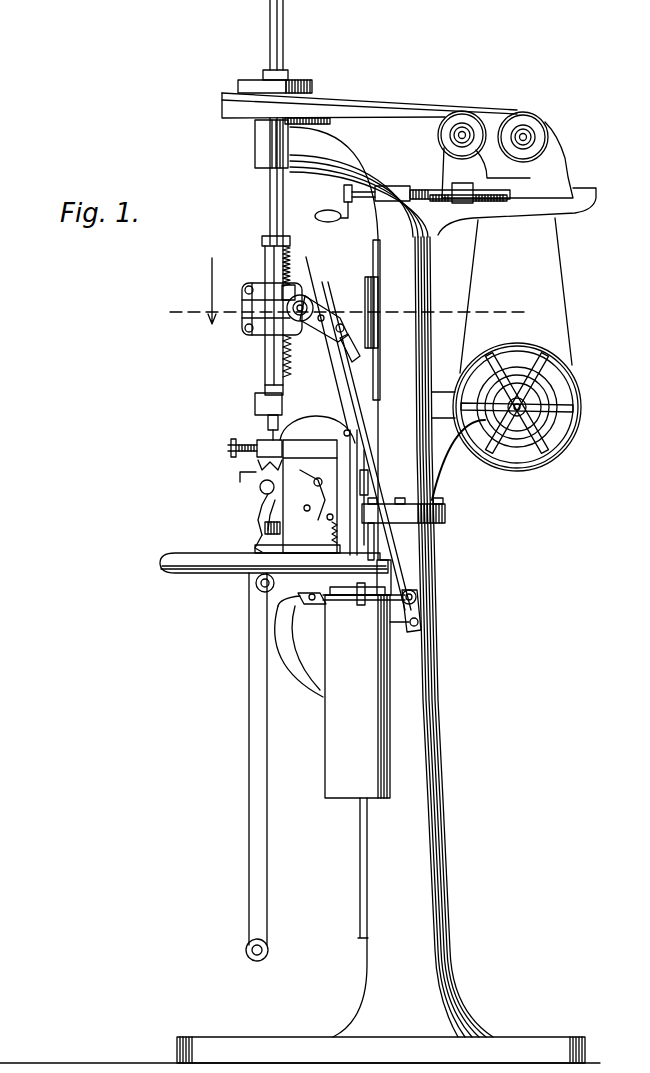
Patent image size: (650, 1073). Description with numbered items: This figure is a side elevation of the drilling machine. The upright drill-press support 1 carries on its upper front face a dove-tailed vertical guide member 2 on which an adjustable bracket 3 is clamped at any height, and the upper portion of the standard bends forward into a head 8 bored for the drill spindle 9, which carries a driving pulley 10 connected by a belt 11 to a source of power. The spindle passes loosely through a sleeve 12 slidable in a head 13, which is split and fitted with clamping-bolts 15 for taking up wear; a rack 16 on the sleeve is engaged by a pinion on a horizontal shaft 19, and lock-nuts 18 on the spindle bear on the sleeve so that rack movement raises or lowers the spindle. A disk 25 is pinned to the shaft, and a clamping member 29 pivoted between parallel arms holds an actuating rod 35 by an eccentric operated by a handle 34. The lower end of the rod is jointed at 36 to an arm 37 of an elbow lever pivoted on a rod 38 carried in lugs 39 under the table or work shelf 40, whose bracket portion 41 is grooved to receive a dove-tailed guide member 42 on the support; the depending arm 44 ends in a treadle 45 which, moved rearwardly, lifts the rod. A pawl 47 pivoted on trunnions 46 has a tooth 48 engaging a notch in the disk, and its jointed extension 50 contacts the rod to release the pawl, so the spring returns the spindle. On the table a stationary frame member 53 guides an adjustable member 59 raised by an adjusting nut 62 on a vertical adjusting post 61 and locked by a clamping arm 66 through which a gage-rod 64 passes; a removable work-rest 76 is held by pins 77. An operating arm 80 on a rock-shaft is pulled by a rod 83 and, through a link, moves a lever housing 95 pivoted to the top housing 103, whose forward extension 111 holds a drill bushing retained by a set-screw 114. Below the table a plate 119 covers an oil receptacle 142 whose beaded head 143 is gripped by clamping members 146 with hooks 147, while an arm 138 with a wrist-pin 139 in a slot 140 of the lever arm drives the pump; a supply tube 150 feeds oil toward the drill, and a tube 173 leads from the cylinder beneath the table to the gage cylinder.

The upright drill-press support 1 is at (438, 638).
The dove-tailed vertical guide member 2 is at (373, 250).
The adjustable bracket 3 is at (367, 286).
The head 8 is at (258, 146).
The drill-stock or spindle 9 is at (270, 32).
The driving pulley 10 is at (232, 88).
The belt 11 is at (392, 103).
The sleeve 12 is at (265, 256).
The head 13 is at (270, 313).
The clamping-bolts 15 is at (248, 288).
The rack 16 is at (289, 268).
The lock-nuts 18 is at (268, 238).
The horizontal shaft 19 is at (301, 322).
The disk 25 is at (272, 335).
The clamping member 29 is at (341, 325).
The handle 34 is at (352, 338).
The actuating rod 35 is at (378, 484).
The jointed connection 36 is at (410, 620).
The arm of elbow lever 37 is at (395, 623).
The rod 38 is at (258, 591).
The lugs 39 is at (260, 577).
The table or work shelf 40 is at (180, 553).
The bracket portion 41 is at (322, 605).
The dove-tailed guide member 42 is at (360, 842).
The depending arm 44 is at (249, 752).
The treadle 45 is at (246, 950).
The trunnions 46 is at (322, 366).
The pawl 47 is at (308, 268).
The tooth 48 is at (288, 307).
The extension 50 is at (366, 446).
The stationary frame member 53 is at (297, 496).
The adjustable member 59 is at (262, 494).
The vertical adjusting post 61 is at (270, 538).
The adjusting nut 62 is at (265, 526).
The gage-rod 64 is at (260, 488).
The clamping arm 66 is at (252, 518).
The pillow-block or work-rest 76 is at (257, 458).
The pins 77 is at (240, 474).
The operating arm 80 is at (332, 526).
The rod 83 is at (340, 397).
The housing or lever member 95 is at (332, 481).
The top housing 103 is at (350, 435).
The forward extension 111 is at (267, 443).
The set-screw 114 is at (226, 448).
The circular supporting plate member 119 is at (415, 595).
The arm 138 is at (322, 640).
The wrist-pin 139 is at (286, 608).
The slot 140 is at (306, 601).
The receptacle 142 is at (357, 692).
The flange or bead 143 is at (352, 669).
The clamping members 146 is at (385, 592).
The hooks 147 is at (430, 610).
The supply tube 150 is at (327, 430).
The tube 173 is at (350, 455).